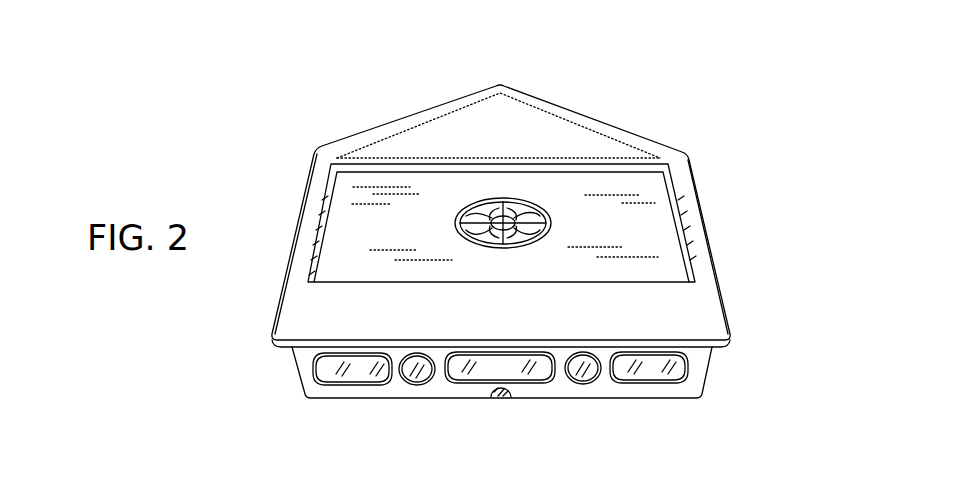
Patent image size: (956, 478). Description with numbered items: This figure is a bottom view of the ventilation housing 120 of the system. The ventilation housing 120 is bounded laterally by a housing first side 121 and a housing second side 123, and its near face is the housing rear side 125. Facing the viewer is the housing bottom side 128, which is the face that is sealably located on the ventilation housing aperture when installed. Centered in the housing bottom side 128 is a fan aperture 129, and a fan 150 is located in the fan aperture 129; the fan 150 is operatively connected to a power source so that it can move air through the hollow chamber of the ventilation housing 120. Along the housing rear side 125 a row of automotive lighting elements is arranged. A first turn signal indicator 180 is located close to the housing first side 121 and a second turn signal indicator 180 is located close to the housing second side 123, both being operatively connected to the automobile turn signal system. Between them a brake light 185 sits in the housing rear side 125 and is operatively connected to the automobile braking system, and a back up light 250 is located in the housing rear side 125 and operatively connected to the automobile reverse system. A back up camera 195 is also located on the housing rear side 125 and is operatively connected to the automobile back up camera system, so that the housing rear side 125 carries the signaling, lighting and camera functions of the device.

The ventilation housing 120 is at (357, 138).
The housing first side 121 is at (720, 293).
The housing second side 123 is at (305, 200).
The housing rear side 125 is at (699, 384).
The housing bottom side 128 is at (585, 140).
The fan aperture 129 is at (469, 203).
The fan 150 is at (527, 230).
The turn signal indicator 180 is at (314, 370).
The brake light 185 is at (458, 378).
The back up camera 195 is at (502, 396).
The back up light 250 is at (401, 377).